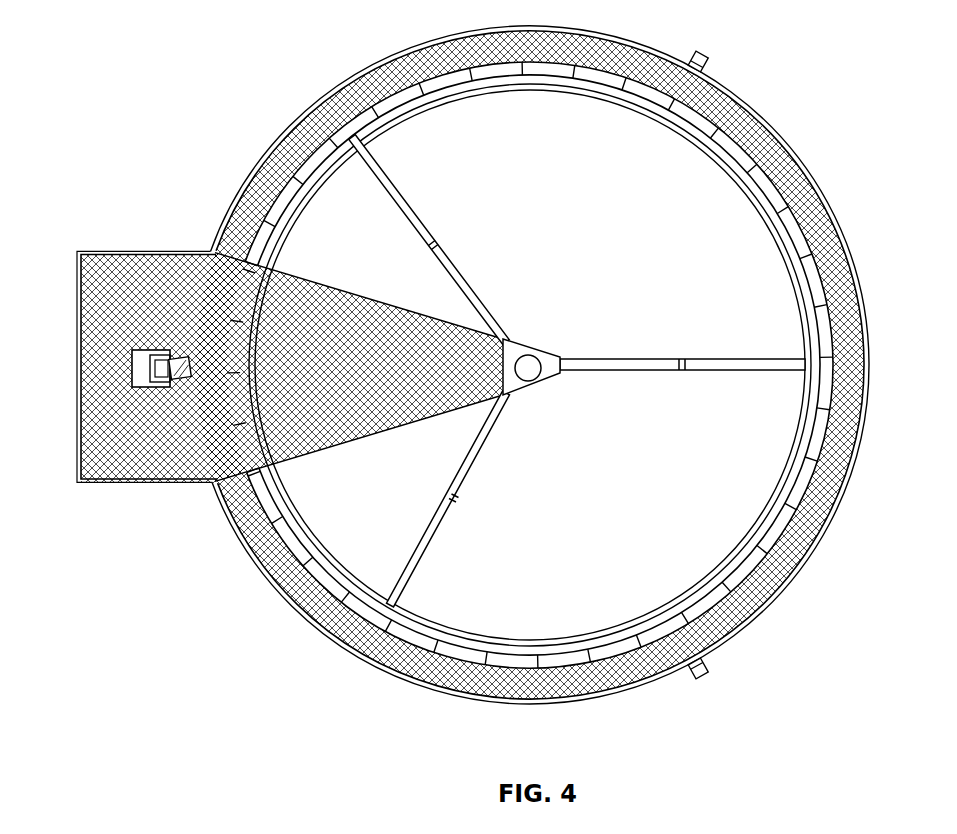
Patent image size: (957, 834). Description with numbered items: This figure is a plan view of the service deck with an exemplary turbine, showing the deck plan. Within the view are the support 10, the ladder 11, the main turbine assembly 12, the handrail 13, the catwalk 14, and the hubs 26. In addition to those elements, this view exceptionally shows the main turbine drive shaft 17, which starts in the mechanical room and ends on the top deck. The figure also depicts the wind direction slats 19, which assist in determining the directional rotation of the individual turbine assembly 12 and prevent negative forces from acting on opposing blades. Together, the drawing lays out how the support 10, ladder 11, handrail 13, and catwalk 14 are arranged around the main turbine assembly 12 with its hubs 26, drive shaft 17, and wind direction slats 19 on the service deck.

The support 10 is at (698, 54).
The ladder 11 is at (134, 366).
The main turbine assembly 12 is at (740, 575).
The handrail 13 is at (838, 507).
The catwalk 14 is at (226, 500).
The main turbine drive shaft 17 is at (545, 339).
The wind direction slats 19 is at (822, 433).
The hubs 26 is at (538, 383).